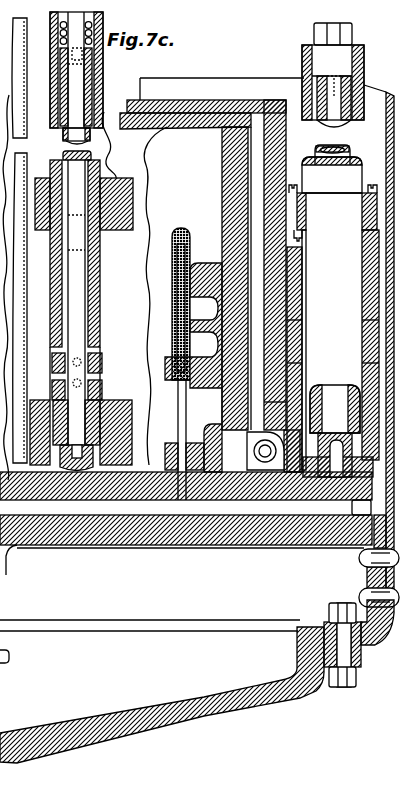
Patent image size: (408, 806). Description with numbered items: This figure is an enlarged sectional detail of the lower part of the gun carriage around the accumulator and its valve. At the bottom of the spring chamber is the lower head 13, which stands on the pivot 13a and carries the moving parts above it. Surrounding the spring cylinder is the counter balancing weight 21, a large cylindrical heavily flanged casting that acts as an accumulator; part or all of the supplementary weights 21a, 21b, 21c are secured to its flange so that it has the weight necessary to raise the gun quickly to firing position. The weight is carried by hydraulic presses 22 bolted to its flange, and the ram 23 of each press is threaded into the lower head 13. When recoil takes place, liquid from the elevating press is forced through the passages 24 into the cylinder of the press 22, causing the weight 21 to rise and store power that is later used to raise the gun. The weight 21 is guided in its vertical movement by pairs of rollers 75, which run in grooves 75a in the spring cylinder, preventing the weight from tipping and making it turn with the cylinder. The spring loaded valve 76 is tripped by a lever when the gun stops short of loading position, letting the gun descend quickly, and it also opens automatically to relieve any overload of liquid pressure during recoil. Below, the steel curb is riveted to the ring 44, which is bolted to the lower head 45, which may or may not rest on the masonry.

The lower head 13 is at (105, 548).
The pivot 13a is at (18, 573).
The counter balancing weight 21 is at (287, 140).
The supplementary weight 21a is at (287, 320).
The supplementary weight 21b is at (287, 367).
The supplementary weight 21c is at (267, 402).
The hydraulic press 22 is at (334, 311).
The ram 23 is at (335, 431).
The passage 24 is at (41, 513).
The ring 44 is at (366, 575).
The lower head 45 is at (208, 711).
The roller 75 is at (257, 430).
The groove 75a is at (305, 408).
The spring loaded valve 76 is at (183, 313).